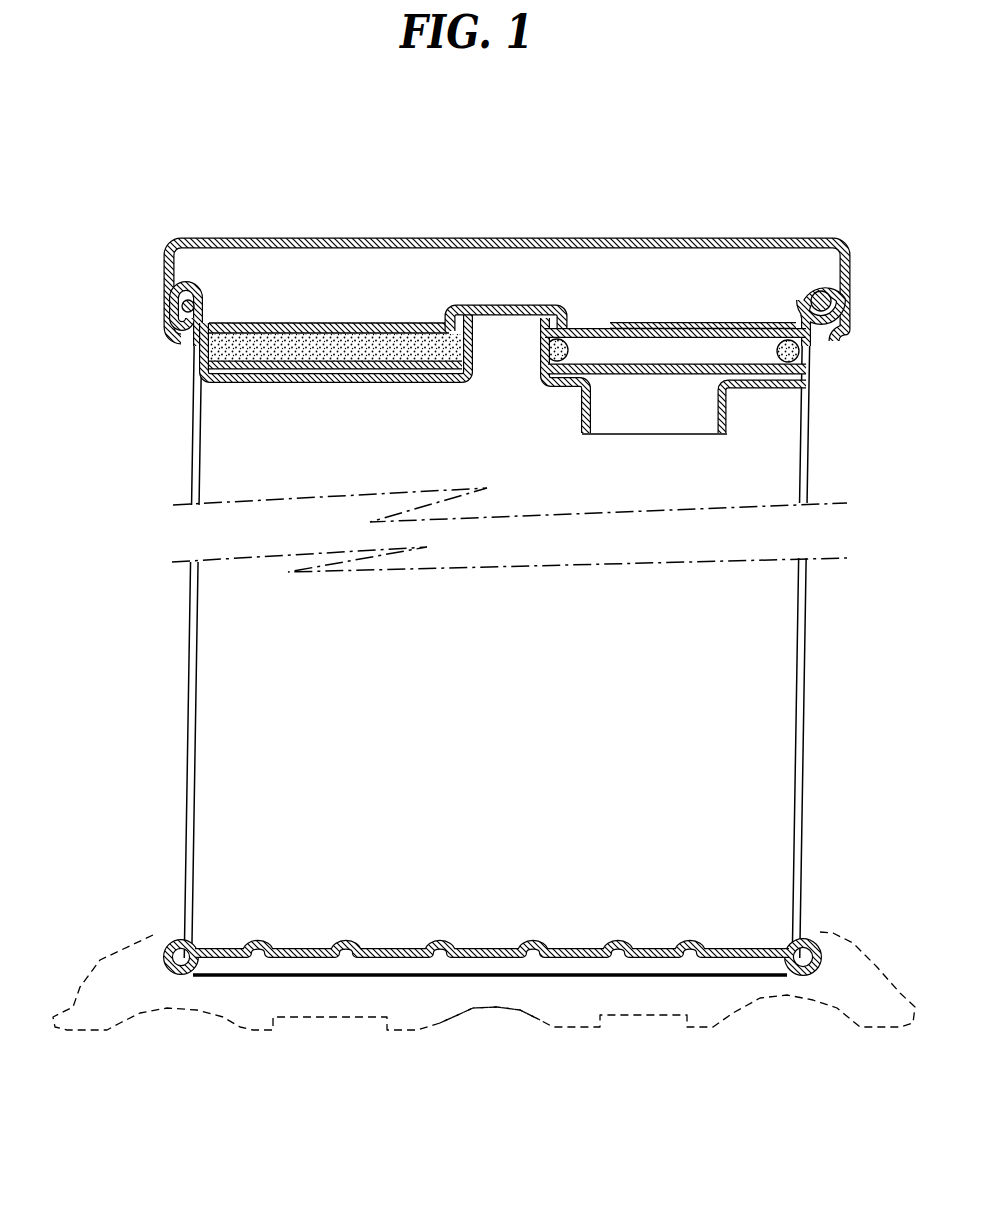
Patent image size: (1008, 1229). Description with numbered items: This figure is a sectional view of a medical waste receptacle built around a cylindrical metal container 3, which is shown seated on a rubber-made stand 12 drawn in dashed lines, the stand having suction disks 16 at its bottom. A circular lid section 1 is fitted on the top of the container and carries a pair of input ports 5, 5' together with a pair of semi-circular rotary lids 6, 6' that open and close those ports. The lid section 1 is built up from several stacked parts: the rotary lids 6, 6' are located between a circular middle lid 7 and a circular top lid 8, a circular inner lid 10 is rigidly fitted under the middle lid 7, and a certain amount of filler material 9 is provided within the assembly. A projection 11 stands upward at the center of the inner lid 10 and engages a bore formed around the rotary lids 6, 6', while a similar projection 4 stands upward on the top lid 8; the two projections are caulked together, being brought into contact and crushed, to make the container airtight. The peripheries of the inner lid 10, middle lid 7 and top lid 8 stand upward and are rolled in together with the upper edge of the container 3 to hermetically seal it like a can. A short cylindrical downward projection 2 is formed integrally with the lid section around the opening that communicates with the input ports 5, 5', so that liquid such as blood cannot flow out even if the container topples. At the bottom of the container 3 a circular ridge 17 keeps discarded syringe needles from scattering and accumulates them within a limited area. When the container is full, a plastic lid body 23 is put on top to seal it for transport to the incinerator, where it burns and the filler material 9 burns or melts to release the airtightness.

The circular lid section 1 is at (321, 315).
The short cylindrical downward projection 2 is at (725, 409).
The cylindrical metal container 3 is at (808, 735).
The projection 4 is at (517, 305).
The input port 5 is at (675, 300).
The input port 5' is at (677, 398).
The semi-circular rotary lid 6 is at (329, 295).
The semi-circular rotary lid 6' is at (335, 411).
The circular middle lid 7 is at (565, 386).
The circular top lid 8 is at (600, 324).
The filler material 9 is at (266, 345).
The circular inner lid 10 is at (398, 384).
The projection 11 is at (500, 317).
The rubber-made stand 12 is at (827, 990).
The suction disk 16 is at (497, 1007).
The circular ridge 17 is at (613, 941).
The plastic lid body 23 is at (604, 239).